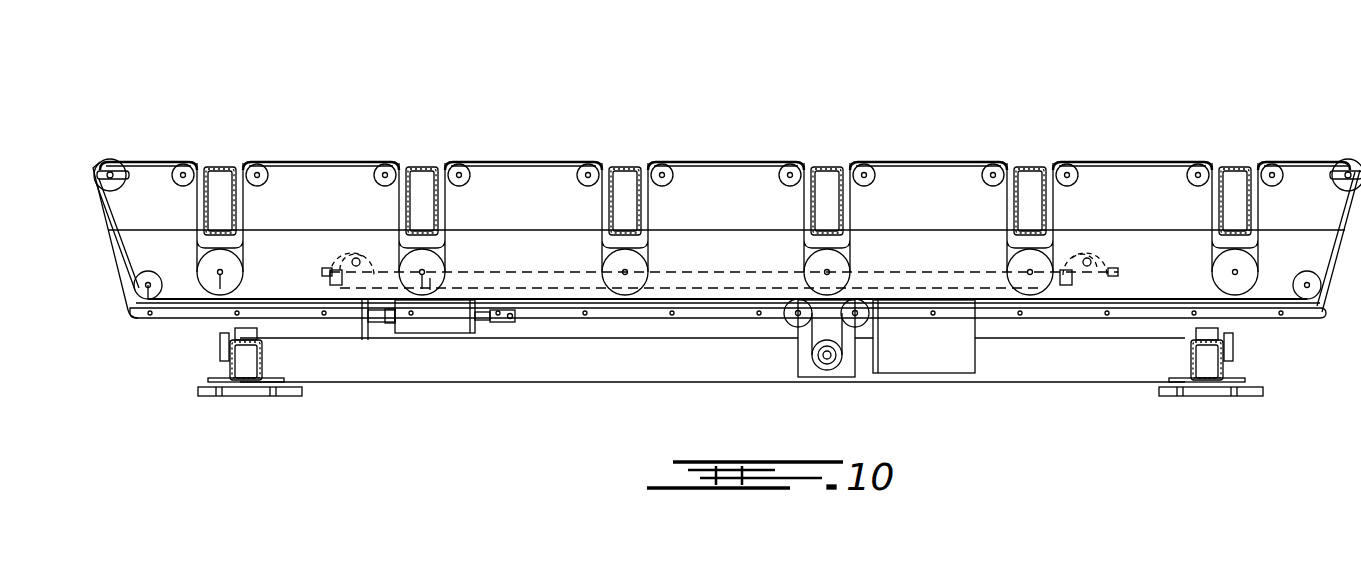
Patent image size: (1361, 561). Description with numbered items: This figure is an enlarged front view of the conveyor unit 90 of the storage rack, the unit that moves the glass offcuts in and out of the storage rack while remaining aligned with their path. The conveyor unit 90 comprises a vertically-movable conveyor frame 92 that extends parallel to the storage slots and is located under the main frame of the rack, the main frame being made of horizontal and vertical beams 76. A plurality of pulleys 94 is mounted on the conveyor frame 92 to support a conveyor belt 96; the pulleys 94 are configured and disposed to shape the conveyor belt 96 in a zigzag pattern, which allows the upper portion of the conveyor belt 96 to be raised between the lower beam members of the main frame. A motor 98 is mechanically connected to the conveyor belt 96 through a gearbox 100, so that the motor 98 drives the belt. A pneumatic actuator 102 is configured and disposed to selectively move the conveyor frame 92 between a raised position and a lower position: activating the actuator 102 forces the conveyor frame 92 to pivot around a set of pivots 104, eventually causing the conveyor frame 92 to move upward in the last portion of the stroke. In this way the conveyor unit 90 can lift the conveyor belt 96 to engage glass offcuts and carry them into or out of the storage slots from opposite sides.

The conveyor unit 90 is at (97, 147).
The conveyor frame 92 is at (137, 233).
The pulleys 94 is at (585, 162).
The vertical beams 76 is at (622, 165).
The conveyor belt 96 is at (708, 160).
The pivots 104 is at (340, 248).
The actuator 102 is at (438, 325).
The gearbox 100 is at (860, 375).
The motor 98 is at (957, 347).